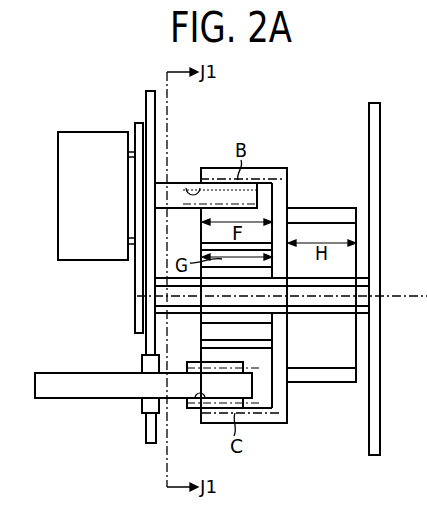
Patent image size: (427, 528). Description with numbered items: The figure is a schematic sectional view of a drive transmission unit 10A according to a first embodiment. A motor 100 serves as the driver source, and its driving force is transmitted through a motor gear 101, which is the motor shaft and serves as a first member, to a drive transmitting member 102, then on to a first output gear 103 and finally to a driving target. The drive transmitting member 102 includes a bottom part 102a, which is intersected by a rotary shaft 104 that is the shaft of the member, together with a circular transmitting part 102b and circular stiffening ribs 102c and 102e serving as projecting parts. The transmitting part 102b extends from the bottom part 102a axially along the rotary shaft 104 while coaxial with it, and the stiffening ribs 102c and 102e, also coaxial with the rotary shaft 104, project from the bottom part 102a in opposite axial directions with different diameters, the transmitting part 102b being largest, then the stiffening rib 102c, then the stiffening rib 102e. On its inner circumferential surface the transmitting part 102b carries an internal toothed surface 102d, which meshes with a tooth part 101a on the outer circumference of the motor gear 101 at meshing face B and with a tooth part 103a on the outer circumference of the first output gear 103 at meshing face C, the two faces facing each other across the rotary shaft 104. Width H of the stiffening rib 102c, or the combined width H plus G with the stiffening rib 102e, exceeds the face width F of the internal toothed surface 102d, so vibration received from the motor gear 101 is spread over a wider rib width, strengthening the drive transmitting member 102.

The drive transmission unit 10A is at (322, 91).
The motor 100 is at (92, 134).
The motor gear 101 is at (175, 207).
The tooth part 101a is at (192, 188).
The drive transmitting member 102 is at (290, 390).
The bottom part 102a is at (280, 192).
The transmitting part 102b is at (212, 169).
The stiffening rib 102c is at (322, 208).
The internal toothed surface 102d is at (265, 182).
The stiffening rib 102e is at (216, 346).
The first output gear 103 is at (95, 395).
The tooth part 103a is at (198, 402).
The rotary shaft 104 is at (338, 308).